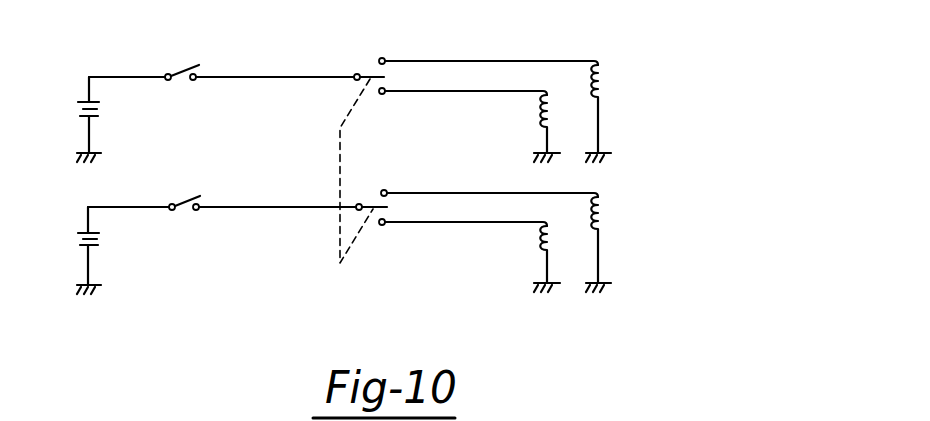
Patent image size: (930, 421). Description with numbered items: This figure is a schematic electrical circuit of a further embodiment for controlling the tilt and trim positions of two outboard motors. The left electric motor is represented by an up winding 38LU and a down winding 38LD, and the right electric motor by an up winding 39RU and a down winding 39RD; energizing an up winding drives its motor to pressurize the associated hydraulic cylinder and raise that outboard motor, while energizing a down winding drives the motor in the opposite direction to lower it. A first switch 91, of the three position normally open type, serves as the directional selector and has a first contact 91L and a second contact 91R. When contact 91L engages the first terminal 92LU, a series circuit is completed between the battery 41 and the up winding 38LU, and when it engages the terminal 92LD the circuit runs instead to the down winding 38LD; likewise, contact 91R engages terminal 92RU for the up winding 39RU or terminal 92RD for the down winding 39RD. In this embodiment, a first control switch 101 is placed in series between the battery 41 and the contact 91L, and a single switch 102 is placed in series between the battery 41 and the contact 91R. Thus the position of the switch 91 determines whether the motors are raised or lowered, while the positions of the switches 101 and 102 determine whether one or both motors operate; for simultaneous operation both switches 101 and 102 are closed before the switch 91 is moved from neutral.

The battery 41 is at (76, 113).
The first control switch 101 is at (181, 65).
The single switch 102 is at (186, 200).
The first switch 91 is at (337, 172).
The first contact 91L is at (372, 74).
The second contact 91R is at (371, 212).
The first terminal 92LU is at (386, 59).
The terminal 92LD is at (386, 93).
The first terminal 92RU is at (388, 191).
The terminal 92RD is at (386, 224).
The up winding 38LU is at (602, 88).
The down winding 38LD is at (549, 120).
The up winding 39RU is at (602, 205).
The down winding 39RD is at (549, 250).